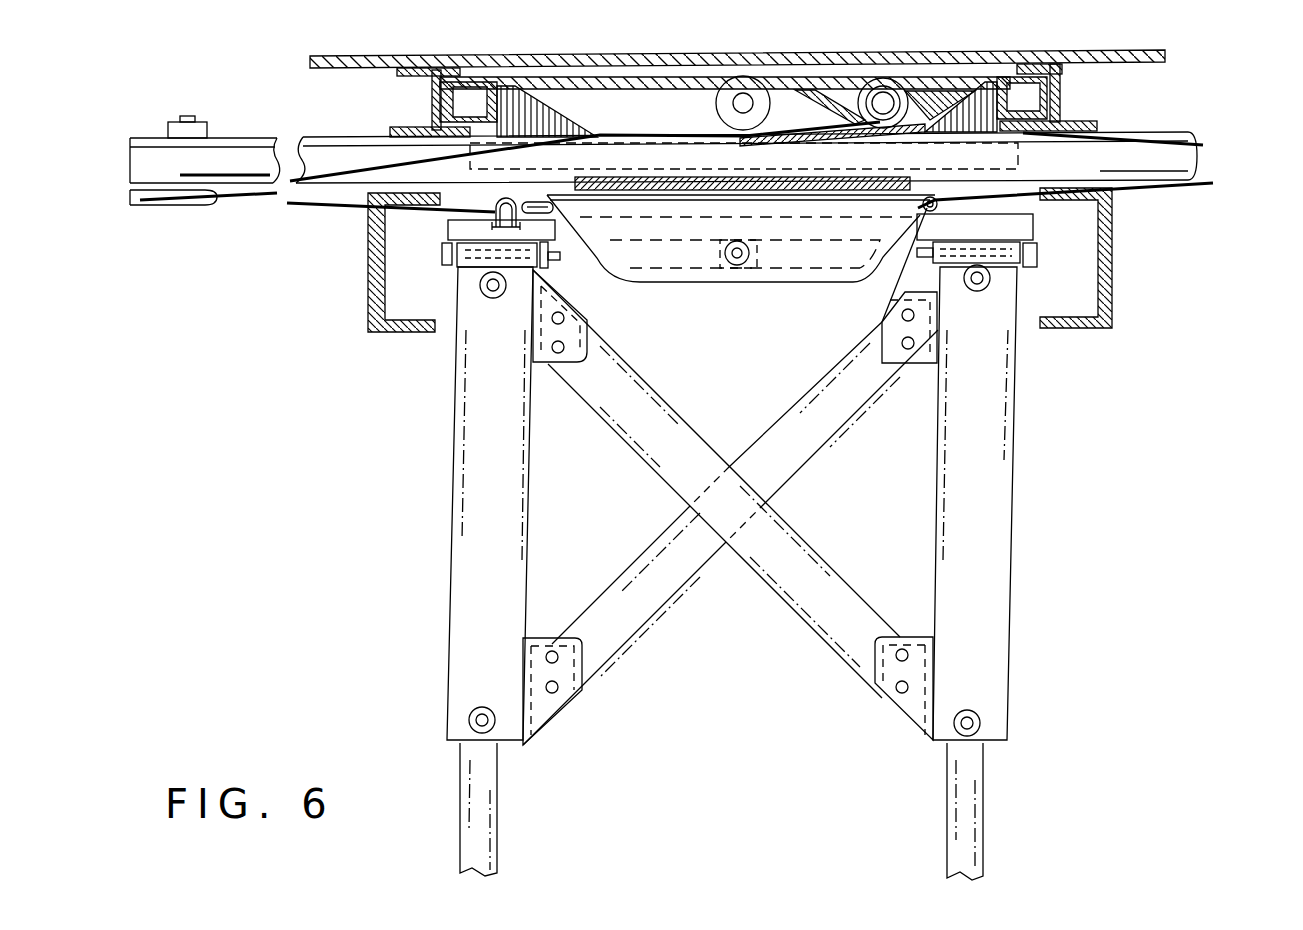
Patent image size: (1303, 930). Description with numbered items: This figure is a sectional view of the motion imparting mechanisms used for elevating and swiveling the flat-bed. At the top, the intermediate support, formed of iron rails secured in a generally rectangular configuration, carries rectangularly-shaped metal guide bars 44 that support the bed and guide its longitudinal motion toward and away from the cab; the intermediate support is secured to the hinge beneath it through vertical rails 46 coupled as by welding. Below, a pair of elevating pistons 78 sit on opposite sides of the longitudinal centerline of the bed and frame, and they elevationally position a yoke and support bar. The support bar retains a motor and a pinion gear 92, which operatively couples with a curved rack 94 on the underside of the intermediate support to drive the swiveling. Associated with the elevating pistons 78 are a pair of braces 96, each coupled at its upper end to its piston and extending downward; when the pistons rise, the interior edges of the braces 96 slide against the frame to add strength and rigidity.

The guide bars 44 is at (437, 92).
The vertical rails 46 is at (440, 113).
The elevating pistons 78 is at (470, 556).
The pinion gear 92 is at (289, 205).
The curved rack 94 is at (676, 153).
The braces 96 is at (803, 585).